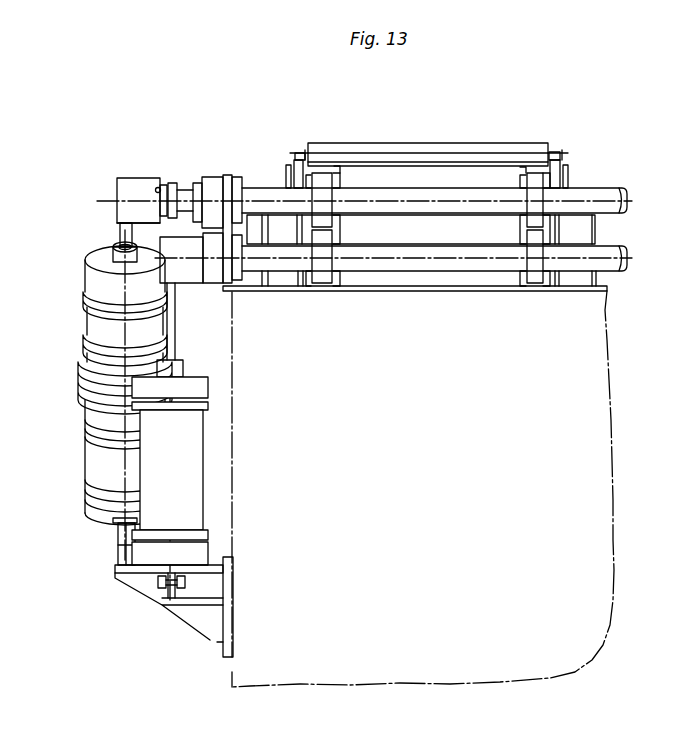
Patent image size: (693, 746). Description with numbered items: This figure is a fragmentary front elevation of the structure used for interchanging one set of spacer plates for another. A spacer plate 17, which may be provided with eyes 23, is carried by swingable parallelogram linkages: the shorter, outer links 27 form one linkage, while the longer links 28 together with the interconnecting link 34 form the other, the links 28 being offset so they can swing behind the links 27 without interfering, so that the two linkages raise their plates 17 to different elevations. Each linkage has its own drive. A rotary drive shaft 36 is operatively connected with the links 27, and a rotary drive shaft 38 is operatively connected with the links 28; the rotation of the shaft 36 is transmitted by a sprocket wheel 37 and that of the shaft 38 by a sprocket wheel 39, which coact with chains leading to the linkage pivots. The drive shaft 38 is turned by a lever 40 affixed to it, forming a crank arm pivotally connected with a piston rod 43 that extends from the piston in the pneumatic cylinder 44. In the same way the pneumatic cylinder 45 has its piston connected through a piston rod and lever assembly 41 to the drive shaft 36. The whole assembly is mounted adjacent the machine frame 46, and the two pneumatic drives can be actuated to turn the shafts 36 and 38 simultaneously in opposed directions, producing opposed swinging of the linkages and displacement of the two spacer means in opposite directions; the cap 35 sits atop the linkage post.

The spacer plate 17 is at (452, 155).
The eyes 23 is at (306, 150).
The shorter links 27 is at (288, 170).
The longer links 28 is at (301, 230).
The interconnecting link 34 is at (296, 163).
The cap 35 is at (298, 150).
The rotary drive shaft 36 is at (617, 204).
The sprocket wheel 37 is at (212, 183).
The rotary drive shaft 38 is at (608, 262).
The sprocket wheel 39 is at (212, 272).
The lever 40 is at (118, 194).
The piston rod and lever assembly 41 is at (138, 187).
The piston rod 43 is at (176, 328).
The pneumatic cylinder 44 is at (184, 471).
The pneumatic cylinder 45 is at (100, 415).
The machine frame 46 is at (437, 458).